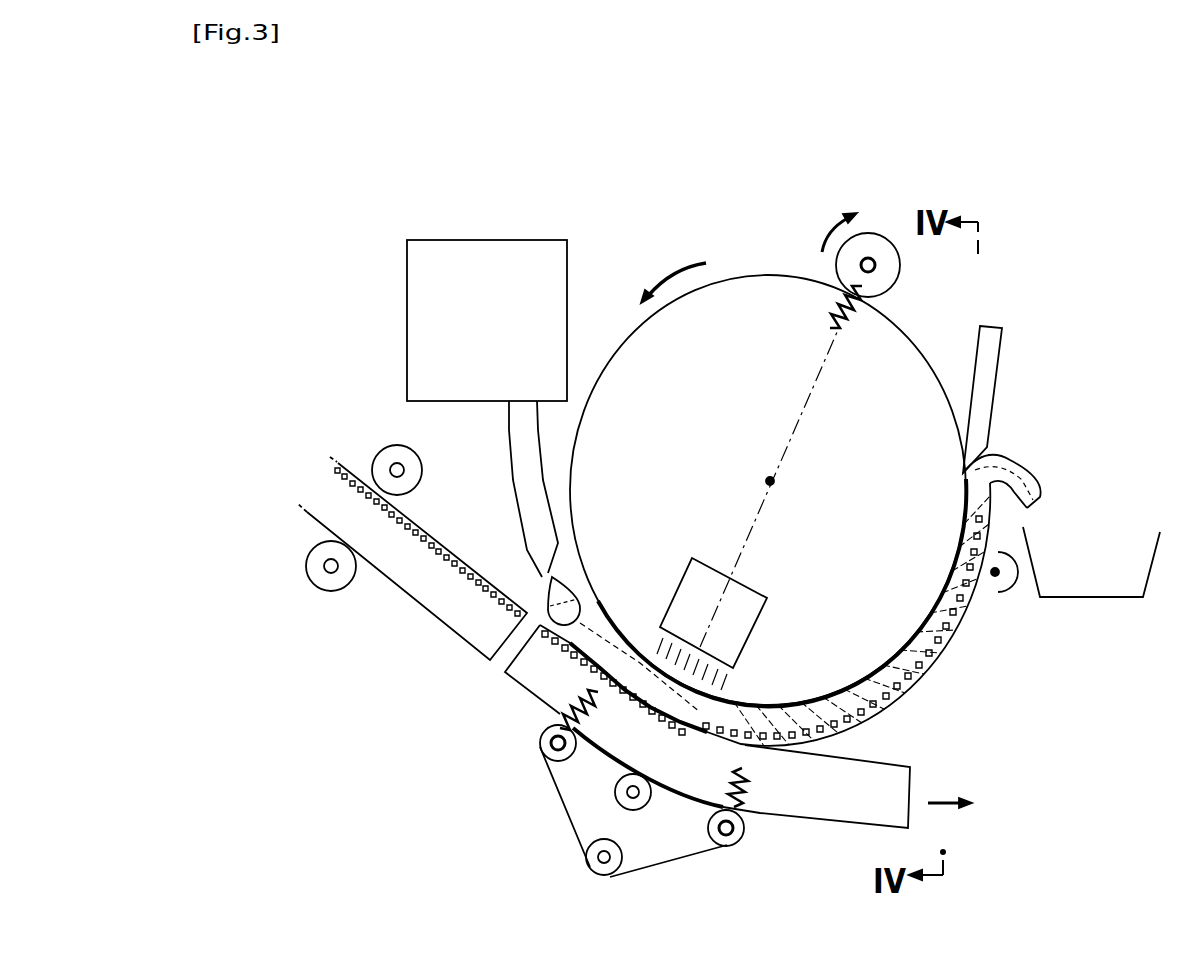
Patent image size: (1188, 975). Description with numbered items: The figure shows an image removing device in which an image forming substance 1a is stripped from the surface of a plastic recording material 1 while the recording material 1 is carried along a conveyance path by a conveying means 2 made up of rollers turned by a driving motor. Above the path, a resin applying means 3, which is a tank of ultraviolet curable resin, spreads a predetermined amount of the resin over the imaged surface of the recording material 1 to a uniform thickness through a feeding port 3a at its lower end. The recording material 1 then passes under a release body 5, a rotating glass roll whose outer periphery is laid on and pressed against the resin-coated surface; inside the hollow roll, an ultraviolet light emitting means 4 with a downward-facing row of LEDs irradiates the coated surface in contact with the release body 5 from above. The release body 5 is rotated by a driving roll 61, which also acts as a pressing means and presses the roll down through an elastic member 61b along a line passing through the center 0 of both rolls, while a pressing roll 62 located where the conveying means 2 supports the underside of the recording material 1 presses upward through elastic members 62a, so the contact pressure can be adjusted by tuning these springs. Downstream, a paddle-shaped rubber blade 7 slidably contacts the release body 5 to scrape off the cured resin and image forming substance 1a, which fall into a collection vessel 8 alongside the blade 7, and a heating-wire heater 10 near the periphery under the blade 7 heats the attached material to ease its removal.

The recording material 1 is at (402, 585).
The image forming substance 1a is at (433, 532).
The conveying means 2 is at (384, 452).
The resin applying means 3 is at (458, 240).
The feeding port 3a is at (542, 577).
The ultraviolet light emitting means 4 is at (707, 556).
The release body 5 is at (738, 275).
The center O-O 0 is at (773, 482).
The driving roll 61 is at (858, 228).
The elastic member 61b is at (866, 307).
The pressing roll 62 is at (606, 876).
The elastic members 62a is at (557, 700).
The blade 7 is at (990, 397).
The collection vessel 8 is at (1130, 600).
The heating-wire heater 10 is at (1012, 590).